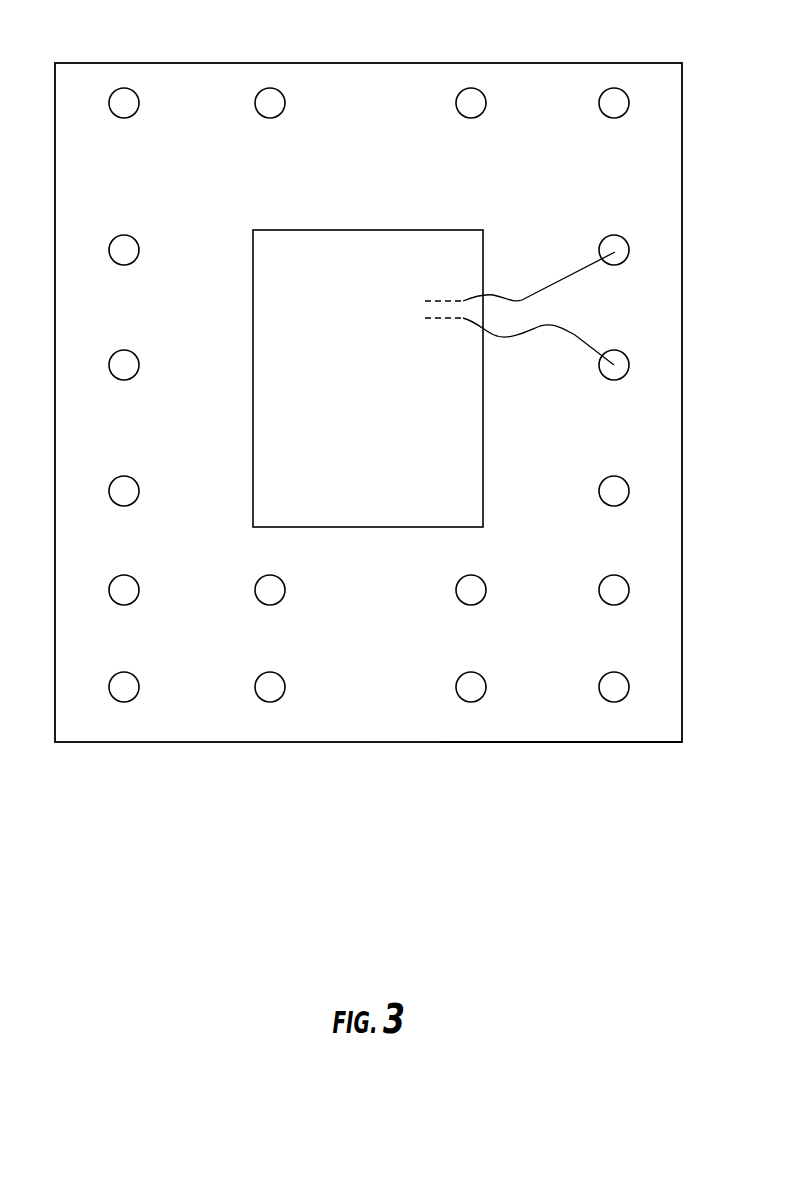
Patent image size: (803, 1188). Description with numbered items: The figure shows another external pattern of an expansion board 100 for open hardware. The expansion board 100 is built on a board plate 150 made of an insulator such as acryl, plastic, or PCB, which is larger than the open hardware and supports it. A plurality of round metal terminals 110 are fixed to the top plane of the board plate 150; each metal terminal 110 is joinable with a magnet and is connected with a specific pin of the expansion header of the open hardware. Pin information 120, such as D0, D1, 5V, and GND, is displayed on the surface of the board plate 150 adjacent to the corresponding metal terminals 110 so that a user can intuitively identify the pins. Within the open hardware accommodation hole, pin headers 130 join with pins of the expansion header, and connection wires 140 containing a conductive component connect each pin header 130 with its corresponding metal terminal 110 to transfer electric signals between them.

The expansion board 100 is at (391, 803).
The metal terminal 110 is at (125, 101).
The pin information 120 is at (270, 101).
The pin header 130 is at (443, 299).
The connection wire 140 is at (525, 300).
The board plate 150 is at (520, 712).